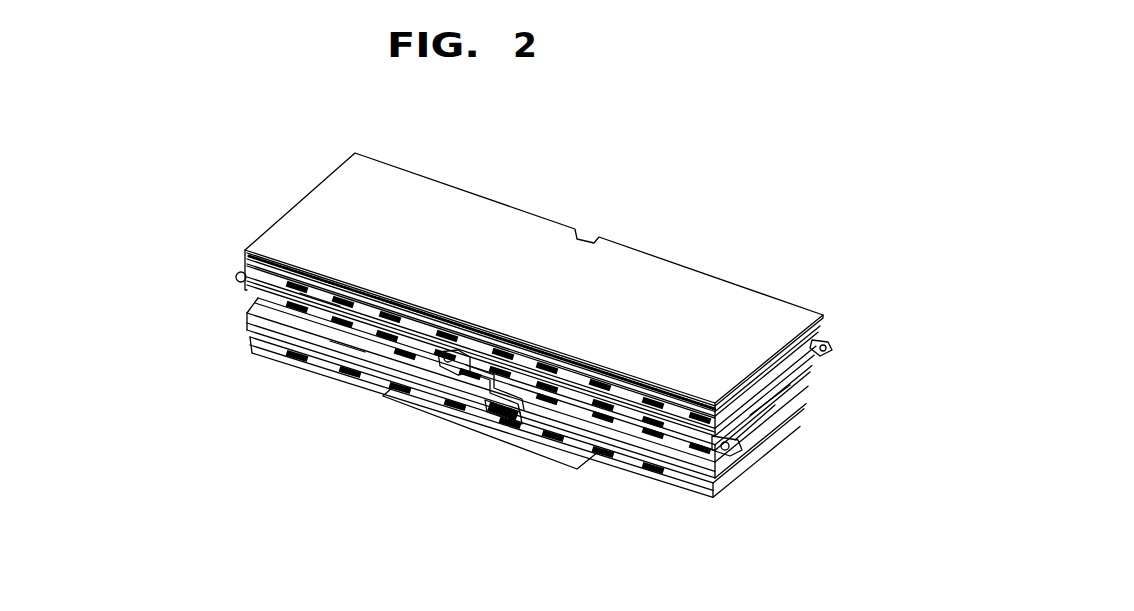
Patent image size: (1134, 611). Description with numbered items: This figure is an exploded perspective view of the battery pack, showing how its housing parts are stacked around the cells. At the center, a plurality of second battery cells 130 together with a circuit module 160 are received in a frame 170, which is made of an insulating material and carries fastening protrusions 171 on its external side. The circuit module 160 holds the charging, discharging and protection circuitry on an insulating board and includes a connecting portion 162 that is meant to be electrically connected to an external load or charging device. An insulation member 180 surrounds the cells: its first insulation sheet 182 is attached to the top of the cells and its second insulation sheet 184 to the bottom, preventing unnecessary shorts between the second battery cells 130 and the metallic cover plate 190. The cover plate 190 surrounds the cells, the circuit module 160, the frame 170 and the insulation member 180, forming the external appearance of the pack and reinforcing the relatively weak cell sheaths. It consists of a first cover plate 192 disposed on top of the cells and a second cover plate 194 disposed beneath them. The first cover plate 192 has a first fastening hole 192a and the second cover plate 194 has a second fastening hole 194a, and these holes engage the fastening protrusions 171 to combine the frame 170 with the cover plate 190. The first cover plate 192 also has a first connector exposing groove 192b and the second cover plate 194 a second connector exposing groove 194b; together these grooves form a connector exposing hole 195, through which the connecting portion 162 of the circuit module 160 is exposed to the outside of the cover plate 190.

The second battery cells 130 is at (747, 427).
The circuit module 160 is at (613, 412).
The connecting portion 162 is at (527, 418).
The frame 170 is at (770, 407).
The fastening protrusions 171 is at (655, 450).
The insulation member 180 is at (893, 329).
The first insulation sheet 182 is at (822, 326).
The second insulation sheet 184 is at (813, 376).
The cover plate 190 is at (160, 255).
The first cover plate 192 is at (271, 236).
The first fastening hole 192a is at (330, 296).
The first connector exposing groove 192b is at (447, 360).
The second cover plate 194 is at (250, 342).
The second fastening hole 194a is at (346, 360).
The second connector exposing groove 194b is at (475, 417).
The connector exposing hole 195 is at (506, 538).